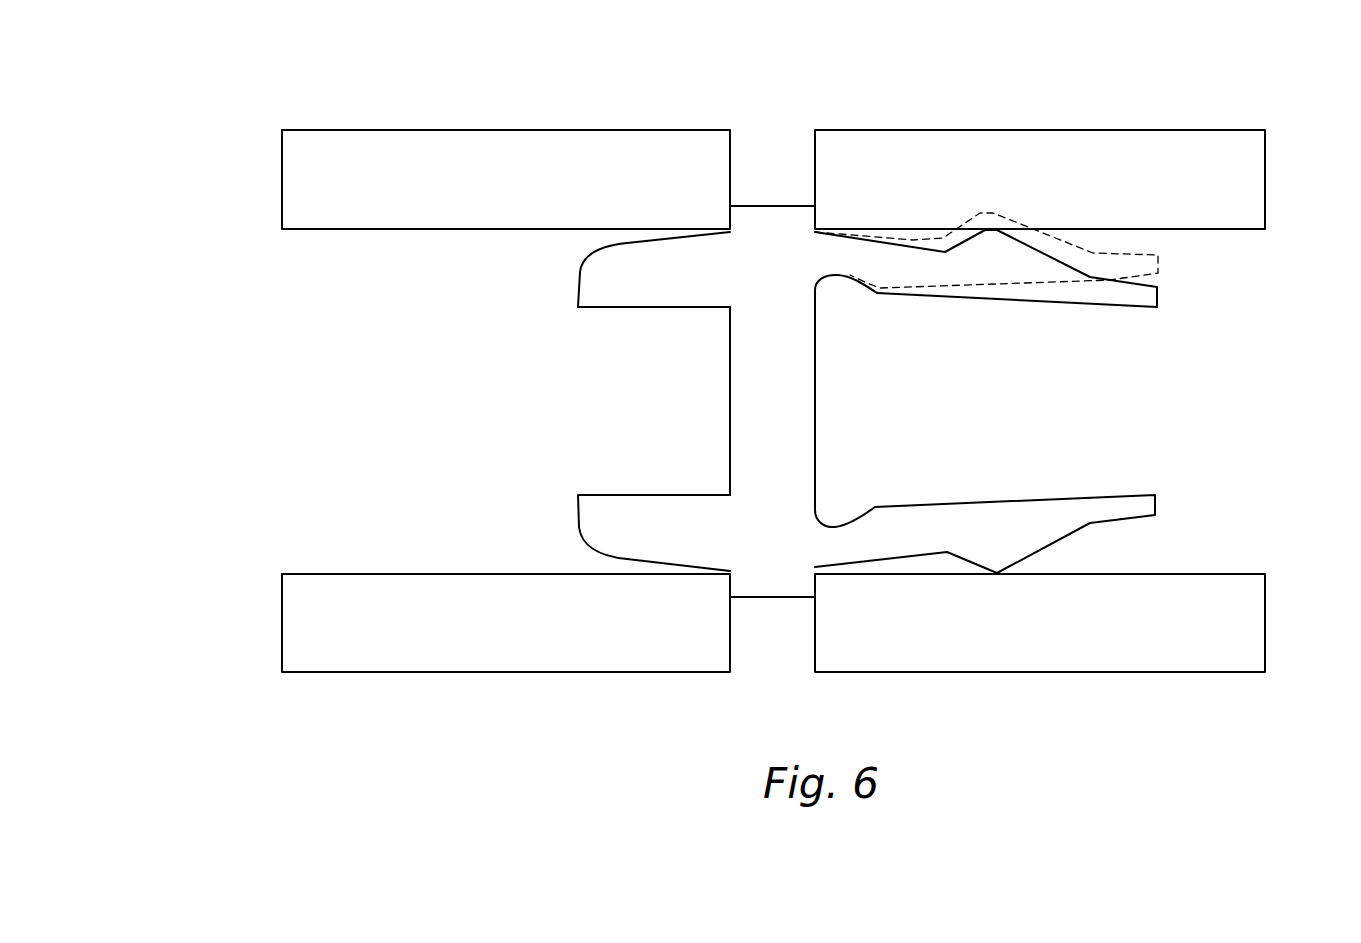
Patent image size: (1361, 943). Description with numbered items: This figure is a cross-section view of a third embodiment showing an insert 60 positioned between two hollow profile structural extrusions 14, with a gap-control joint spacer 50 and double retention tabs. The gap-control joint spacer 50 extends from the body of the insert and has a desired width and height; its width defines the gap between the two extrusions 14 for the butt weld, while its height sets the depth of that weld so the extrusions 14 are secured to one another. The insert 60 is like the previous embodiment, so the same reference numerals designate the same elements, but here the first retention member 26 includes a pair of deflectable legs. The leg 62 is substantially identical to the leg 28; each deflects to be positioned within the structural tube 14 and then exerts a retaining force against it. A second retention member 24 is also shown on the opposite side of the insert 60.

The hollow profile structural extrusion 14 is at (524, 653).
The gap-control joint spacer 50 is at (773, 206).
The first retention member 26 is at (398, 367).
The insert 60 is at (528, 489).
The second seal member 24 is at (1206, 402).
The leg 28 is at (1108, 308).
The leg 62 is at (1107, 502).